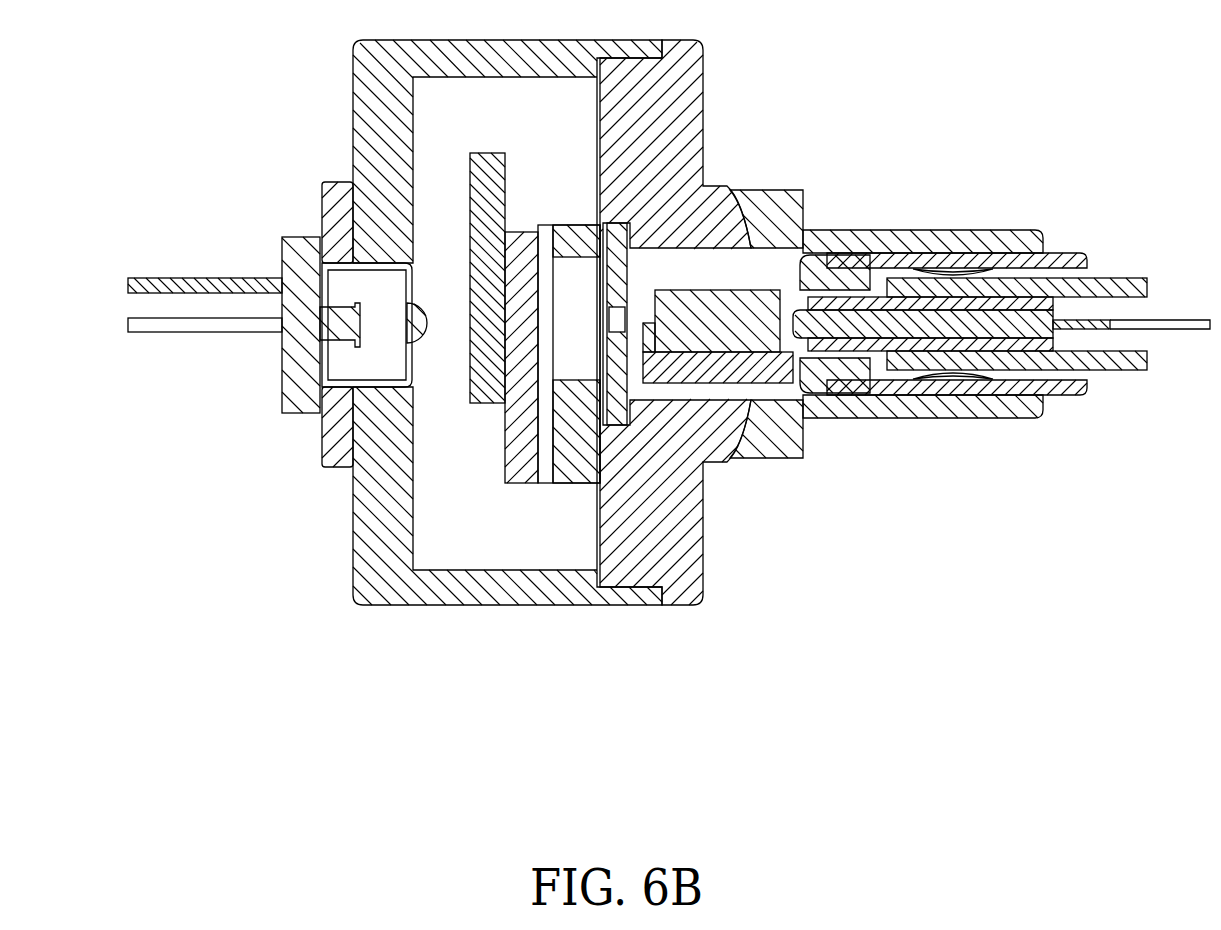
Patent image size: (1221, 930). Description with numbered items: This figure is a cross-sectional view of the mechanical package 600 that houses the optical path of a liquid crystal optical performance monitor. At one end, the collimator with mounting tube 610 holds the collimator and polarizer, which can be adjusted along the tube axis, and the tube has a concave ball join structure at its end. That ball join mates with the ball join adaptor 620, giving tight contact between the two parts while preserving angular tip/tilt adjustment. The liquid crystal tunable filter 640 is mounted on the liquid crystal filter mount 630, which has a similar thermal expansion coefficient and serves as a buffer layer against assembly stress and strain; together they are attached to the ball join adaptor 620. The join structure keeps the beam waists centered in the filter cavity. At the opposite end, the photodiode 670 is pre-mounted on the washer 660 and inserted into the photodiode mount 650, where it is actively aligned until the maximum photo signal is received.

The mechanical package 600 is at (662, 432).
The collimator with mounting tube 610 is at (926, 415).
The ball join adaptor 620 is at (675, 416).
The liquid crystal filter mount 630 is at (535, 305).
The liquid crystal tunable filter 640 is at (488, 385).
The photodiode mount 650 is at (507, 396).
The washer 660 is at (315, 371).
The photodiode 670 is at (270, 358).